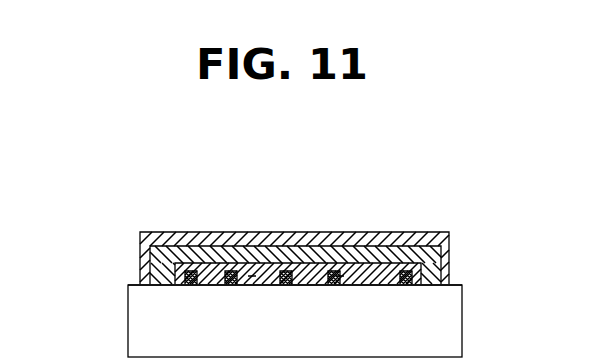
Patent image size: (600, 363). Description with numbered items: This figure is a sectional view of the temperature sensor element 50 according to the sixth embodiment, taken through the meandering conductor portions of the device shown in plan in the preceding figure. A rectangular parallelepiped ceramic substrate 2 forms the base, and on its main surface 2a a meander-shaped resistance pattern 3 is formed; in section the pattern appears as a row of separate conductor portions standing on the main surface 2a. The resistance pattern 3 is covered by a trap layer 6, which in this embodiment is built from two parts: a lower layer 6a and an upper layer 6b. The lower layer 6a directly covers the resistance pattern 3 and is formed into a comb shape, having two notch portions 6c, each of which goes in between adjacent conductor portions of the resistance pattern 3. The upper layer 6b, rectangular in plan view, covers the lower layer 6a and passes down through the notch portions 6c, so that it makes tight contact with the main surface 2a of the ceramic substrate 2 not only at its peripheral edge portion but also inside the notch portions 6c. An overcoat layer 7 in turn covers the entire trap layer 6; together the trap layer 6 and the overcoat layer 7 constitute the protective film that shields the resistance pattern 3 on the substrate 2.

The temperature sensor element 50 is at (130, 222).
The ceramic substrate 2 is at (450, 327).
The main surface 2a is at (140, 282).
The resistance pattern 3 is at (285, 270).
The trap layer 6 is at (525, 186).
The lower layer 6a is at (208, 270).
The upper layer 6b is at (425, 252).
The notch portions 6c is at (250, 276).
The overcoat layer 7 is at (392, 240).